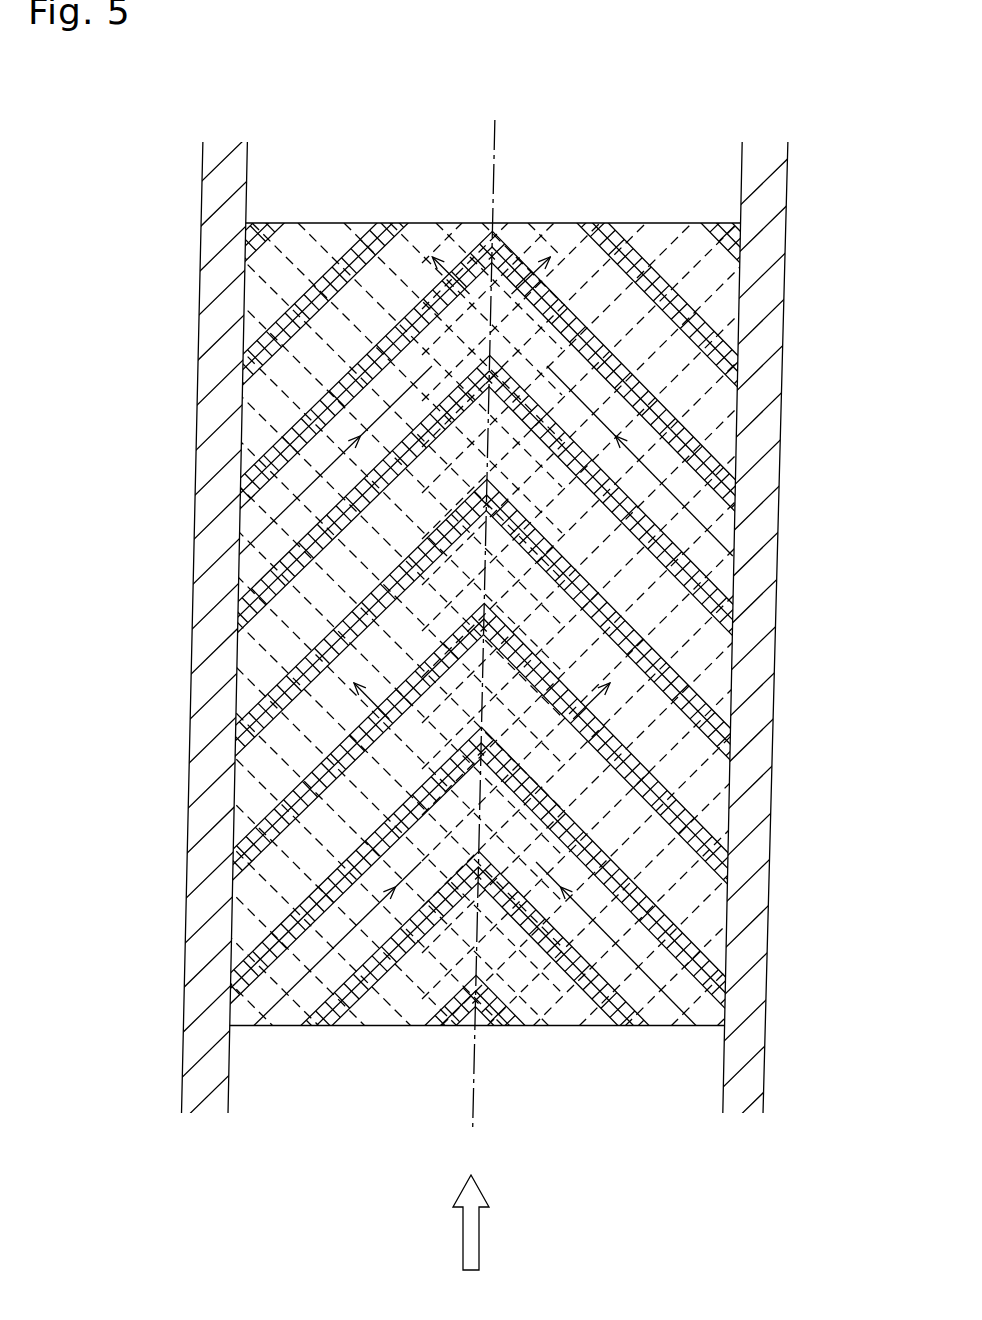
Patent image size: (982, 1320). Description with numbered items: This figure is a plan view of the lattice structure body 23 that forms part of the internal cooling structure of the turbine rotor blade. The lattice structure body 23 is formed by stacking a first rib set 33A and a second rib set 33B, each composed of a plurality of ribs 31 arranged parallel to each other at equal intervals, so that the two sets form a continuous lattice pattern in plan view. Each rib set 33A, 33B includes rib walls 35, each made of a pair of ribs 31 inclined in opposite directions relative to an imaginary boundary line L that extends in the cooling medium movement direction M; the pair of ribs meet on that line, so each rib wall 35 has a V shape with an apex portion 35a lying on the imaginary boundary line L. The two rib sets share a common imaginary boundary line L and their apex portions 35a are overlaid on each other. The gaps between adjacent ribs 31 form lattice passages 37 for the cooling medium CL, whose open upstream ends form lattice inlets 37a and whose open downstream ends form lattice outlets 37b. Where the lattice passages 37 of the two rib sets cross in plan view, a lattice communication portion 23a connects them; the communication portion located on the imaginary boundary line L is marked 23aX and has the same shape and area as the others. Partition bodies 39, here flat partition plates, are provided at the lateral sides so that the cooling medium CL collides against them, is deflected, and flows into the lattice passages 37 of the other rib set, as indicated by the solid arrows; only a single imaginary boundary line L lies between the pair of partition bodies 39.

The lattice structure body 23 is at (518, 217).
The lattice communication portion 23a is at (245, 542).
The lattice communication portion on the imaginary boundary line 23aX is at (460, 800).
The rib 31 is at (425, 770).
The rib wall 35 is at (560, 790).
The first rib set 33A is at (288, 270).
The second rib set 33B is at (368, 245).
The apex portion 35a is at (500, 607).
The lattice passage 37 is at (480, 759).
The lattice inlet 37a is at (355, 1027).
The lattice outlet 37b is at (492, 271).
The partition body 39 is at (205, 463).
The cooling medium CL is at (265, 948).
The imaginary boundary line L is at (493, 165).
The cooling medium movement direction M is at (485, 1240).